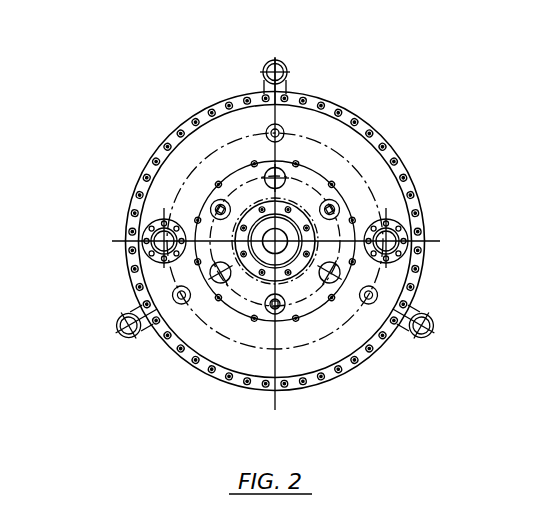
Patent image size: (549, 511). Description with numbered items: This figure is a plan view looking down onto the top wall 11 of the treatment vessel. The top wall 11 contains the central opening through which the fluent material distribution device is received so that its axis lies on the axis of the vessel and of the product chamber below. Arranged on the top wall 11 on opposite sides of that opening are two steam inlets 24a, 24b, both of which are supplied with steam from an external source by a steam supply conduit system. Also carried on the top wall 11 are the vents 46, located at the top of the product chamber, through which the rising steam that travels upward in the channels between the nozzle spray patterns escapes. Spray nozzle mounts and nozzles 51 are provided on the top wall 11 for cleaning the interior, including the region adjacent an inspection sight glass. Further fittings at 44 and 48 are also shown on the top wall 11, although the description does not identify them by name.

The top wall 11 is at (313, 183).
The steam inlet 24a is at (145, 232).
The steam inlet 24b is at (424, 223).
The fastening bolt 44 is at (280, 168).
The vents 46 is at (212, 208).
The pin bushing 48 is at (207, 198).
The spray nozzle mounts and nozzles 51 is at (270, 123).